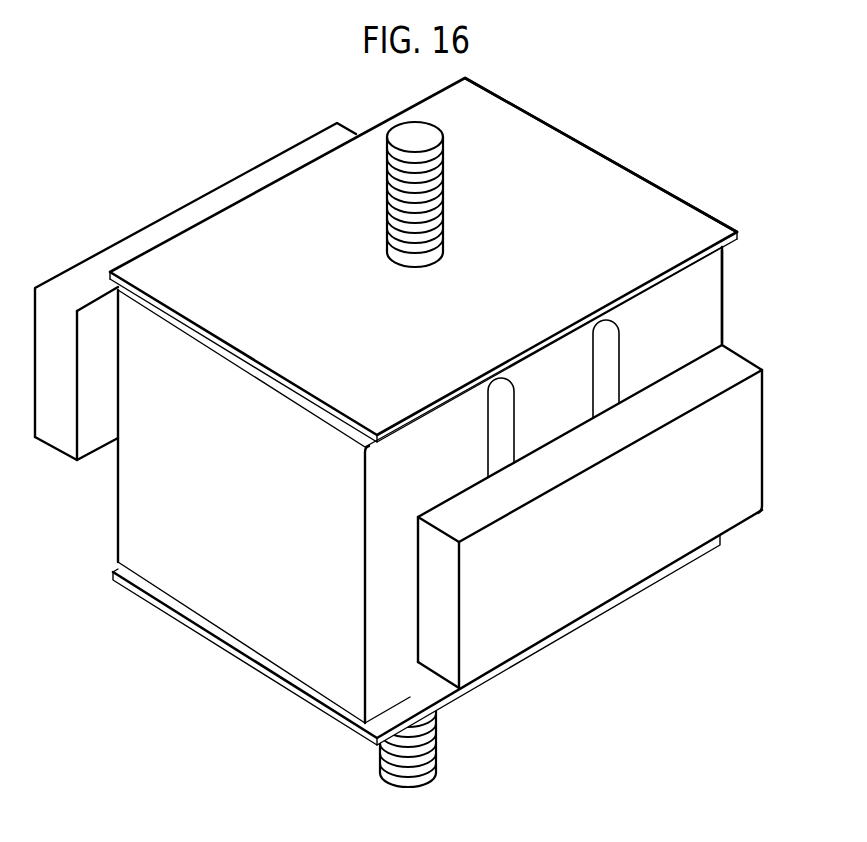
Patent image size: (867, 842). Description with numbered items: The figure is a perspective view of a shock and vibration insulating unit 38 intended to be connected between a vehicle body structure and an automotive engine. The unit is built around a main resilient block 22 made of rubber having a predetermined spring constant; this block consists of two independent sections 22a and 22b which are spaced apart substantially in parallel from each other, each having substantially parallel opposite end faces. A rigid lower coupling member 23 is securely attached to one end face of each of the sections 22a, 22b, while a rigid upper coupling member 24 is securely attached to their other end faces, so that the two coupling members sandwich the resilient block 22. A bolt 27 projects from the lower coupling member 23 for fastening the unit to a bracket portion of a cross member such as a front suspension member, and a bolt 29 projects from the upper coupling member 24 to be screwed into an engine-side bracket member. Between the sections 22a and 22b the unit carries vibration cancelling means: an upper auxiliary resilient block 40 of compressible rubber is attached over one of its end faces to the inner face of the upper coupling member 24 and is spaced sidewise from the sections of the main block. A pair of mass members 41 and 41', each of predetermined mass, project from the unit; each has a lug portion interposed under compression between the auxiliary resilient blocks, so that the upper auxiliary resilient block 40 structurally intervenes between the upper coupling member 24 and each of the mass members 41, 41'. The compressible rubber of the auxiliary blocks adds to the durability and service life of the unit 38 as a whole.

The main resilient block 22 is at (113, 541).
The section of main resilient block 22a is at (303, 668).
The section of main resilient block 22b is at (724, 279).
The lower coupling member 23 is at (204, 638).
The upper coupling member 24 is at (661, 191).
The bolt 27 is at (437, 753).
The bolt 29 is at (443, 183).
The shock and vibration insulating unit 38 is at (579, 132).
The upper auxiliary resilient block 40 is at (512, 392).
The mass member 41 is at (590, 516).
The mass member 41' is at (195, 291).